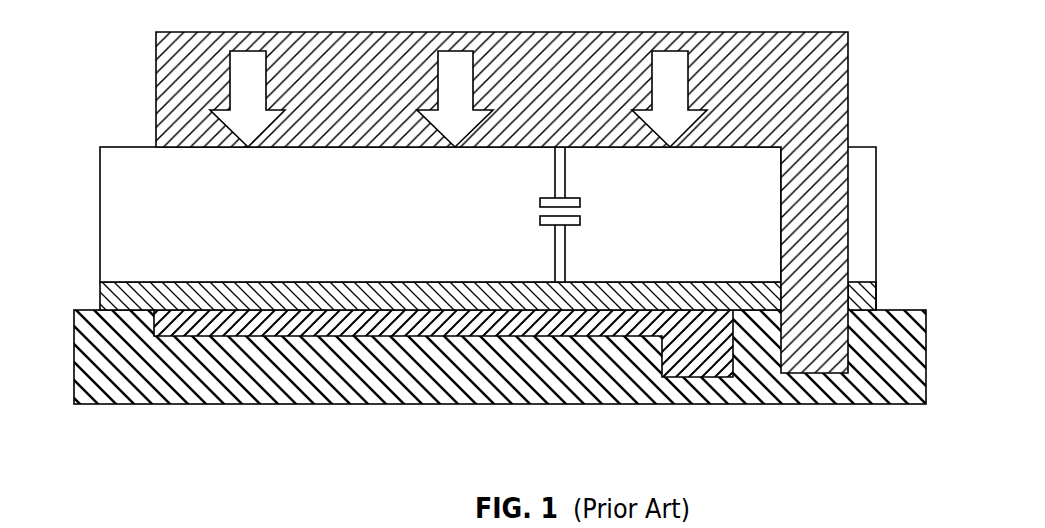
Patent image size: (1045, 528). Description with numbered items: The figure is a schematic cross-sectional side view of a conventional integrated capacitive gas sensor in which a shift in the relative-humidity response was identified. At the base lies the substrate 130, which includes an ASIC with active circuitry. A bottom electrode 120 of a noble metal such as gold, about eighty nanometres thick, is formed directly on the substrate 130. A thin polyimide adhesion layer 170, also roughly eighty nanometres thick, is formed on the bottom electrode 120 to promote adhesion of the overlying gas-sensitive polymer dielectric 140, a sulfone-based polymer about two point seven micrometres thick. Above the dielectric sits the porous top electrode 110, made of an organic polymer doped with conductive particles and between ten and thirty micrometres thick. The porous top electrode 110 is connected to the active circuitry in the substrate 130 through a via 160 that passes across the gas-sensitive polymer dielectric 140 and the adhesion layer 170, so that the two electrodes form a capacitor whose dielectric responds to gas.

The porous top electrode 110 is at (837, 85).
The bottom electrode 120 is at (188, 318).
The substrate 130 is at (222, 377).
The gas-sensitive polymer dielectric 140 is at (122, 227).
The via 160 is at (837, 270).
The polyimide adhesion layer 170 is at (110, 298).